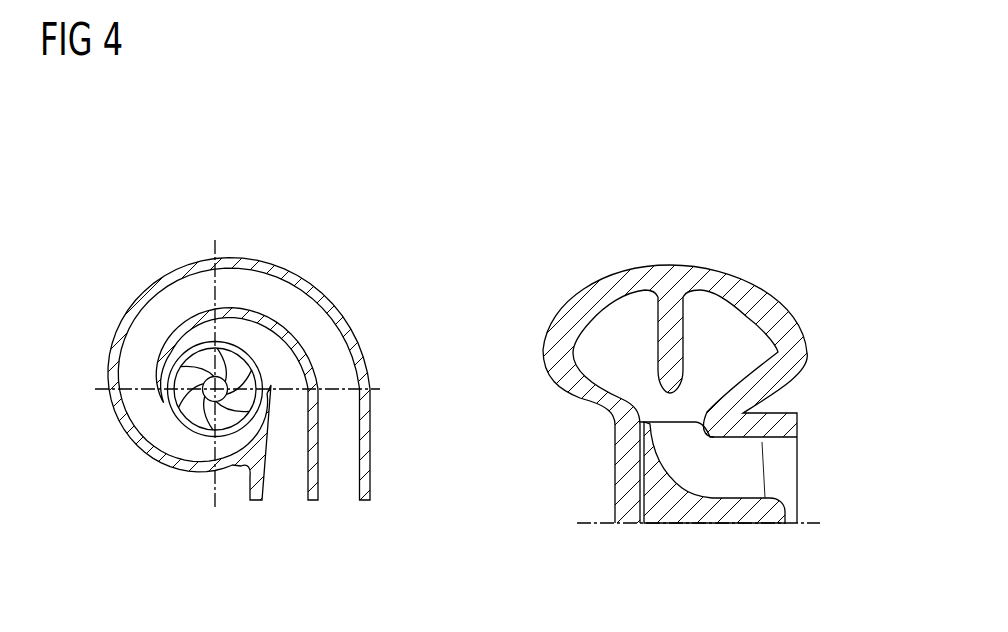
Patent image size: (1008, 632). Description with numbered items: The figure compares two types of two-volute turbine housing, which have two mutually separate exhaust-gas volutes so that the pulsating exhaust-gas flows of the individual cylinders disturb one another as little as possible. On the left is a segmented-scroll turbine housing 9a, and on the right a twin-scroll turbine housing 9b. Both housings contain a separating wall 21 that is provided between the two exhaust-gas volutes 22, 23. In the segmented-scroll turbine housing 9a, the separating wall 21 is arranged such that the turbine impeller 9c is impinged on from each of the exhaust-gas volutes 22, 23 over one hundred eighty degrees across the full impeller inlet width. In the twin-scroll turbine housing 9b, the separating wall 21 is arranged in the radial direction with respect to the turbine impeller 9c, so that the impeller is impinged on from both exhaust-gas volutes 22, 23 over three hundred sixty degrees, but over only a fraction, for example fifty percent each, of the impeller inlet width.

The segmented-scroll turbine housing 9a is at (132, 475).
The twin-scroll turbine housing 9b is at (793, 394).
The turbine impeller 9c is at (183, 403).
The separating wall 21 is at (313, 493).
The exhaust-gas volute 22 is at (272, 367).
The exhaust-gas volute 23 is at (322, 347).